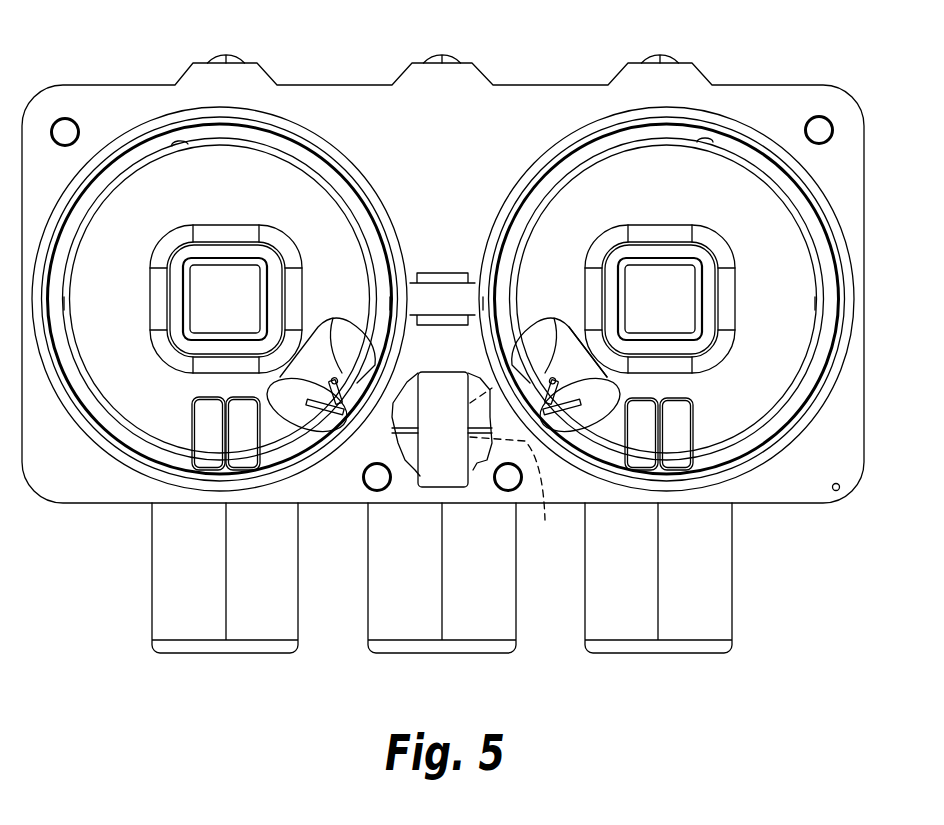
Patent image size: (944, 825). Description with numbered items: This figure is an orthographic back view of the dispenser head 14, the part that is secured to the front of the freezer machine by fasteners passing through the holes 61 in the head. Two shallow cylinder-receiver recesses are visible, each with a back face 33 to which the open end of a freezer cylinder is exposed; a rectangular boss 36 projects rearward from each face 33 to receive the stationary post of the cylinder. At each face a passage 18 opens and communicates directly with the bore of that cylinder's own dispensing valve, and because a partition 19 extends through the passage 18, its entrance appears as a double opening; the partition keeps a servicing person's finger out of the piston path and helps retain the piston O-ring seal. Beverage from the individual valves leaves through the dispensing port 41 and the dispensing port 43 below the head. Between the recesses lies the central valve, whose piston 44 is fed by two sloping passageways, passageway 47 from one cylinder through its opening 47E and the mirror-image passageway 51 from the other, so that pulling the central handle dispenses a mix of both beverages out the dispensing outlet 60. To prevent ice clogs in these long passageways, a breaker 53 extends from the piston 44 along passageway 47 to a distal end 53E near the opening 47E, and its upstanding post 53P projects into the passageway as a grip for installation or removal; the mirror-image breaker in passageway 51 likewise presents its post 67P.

The dispenser head 14 is at (833, 437).
The passage 18 is at (675, 445).
The partition 19 is at (653, 440).
The back face 33 is at (685, 199).
The rectangular boss 36 is at (722, 257).
The beverage dispensing port 41 is at (733, 598).
The dispensing port 43 is at (172, 575).
The piston 44 is at (433, 388).
The passageway 47 is at (561, 358).
The opening 47E is at (537, 316).
The passageway 51 is at (325, 366).
The breaker 53 is at (484, 465).
The distal end 53E is at (655, 414).
The upstanding post 53P is at (615, 381).
The dispensing outlet 60 is at (505, 615).
The holes 61 is at (56, 120).
The upstanding post 67P is at (277, 380).